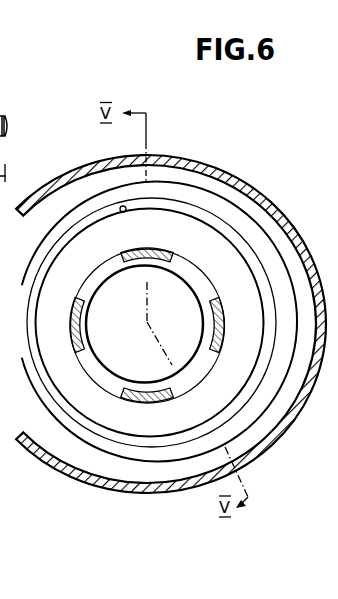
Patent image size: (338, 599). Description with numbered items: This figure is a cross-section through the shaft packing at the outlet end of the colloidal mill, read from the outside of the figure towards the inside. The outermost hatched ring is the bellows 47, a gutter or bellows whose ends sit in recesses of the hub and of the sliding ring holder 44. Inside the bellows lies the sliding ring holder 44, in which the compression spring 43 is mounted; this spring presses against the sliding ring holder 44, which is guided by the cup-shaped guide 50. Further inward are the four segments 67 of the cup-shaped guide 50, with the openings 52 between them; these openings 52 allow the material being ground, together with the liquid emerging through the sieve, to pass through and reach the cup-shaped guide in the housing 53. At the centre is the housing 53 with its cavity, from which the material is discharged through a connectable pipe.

The compression spring 43 is at (187, 213).
The sliding ring holder 44 is at (227, 257).
The bellows 47 is at (146, 496).
The cup-shaped guide 50 is at (131, 251).
The openings 52 is at (86, 282).
The housing 53 is at (106, 375).
The segments 67 is at (67, 327).